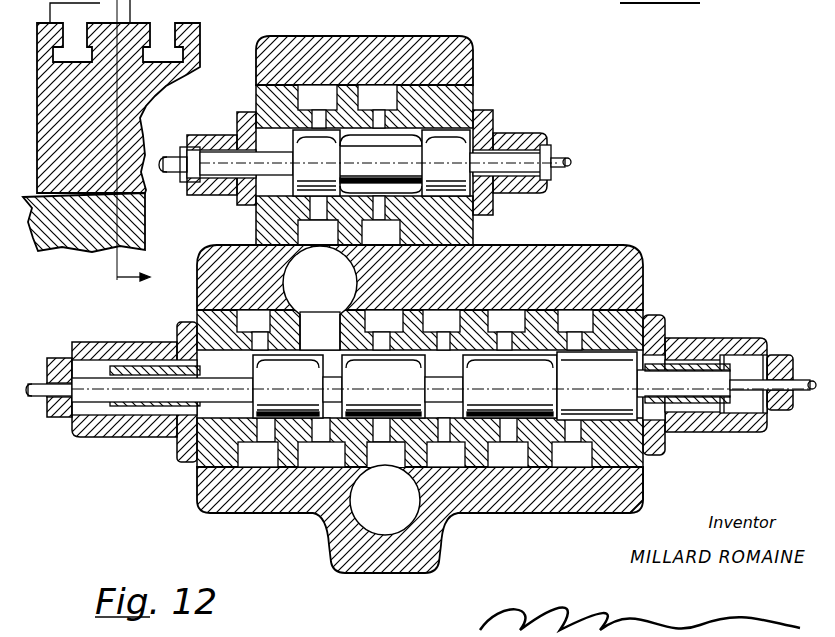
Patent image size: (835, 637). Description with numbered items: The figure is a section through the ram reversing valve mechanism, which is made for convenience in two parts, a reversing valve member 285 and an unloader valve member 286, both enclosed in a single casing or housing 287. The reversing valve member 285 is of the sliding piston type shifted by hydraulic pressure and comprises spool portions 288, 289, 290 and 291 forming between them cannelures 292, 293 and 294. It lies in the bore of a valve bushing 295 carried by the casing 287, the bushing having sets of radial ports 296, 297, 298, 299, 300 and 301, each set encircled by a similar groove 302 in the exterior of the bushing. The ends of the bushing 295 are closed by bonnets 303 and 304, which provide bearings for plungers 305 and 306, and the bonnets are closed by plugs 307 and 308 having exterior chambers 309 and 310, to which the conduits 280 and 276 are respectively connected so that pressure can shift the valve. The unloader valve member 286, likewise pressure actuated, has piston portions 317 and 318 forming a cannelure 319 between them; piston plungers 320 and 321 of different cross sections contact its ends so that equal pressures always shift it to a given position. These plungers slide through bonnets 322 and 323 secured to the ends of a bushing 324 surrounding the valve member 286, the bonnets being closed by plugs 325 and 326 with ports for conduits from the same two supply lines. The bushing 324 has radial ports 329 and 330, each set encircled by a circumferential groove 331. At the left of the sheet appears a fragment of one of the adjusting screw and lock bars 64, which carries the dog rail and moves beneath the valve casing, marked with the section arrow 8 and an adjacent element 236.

The adjusting screw and lock bar 64 is at (142, 231).
The bracket line 236 is at (138, 30).
The section arrow 8 is at (124, 278).
The cannelure 319 is at (472, 56).
The piston portion 317 is at (266, 102).
The piston portion 318 is at (476, 97).
The piston plunger 320 is at (500, 156).
The piston plunger 321 is at (242, 157).
The bushing 324 is at (298, 86).
The radial ports 329 is at (313, 112).
The circumferential groove 331 is at (371, 105).
The radial ports 330 is at (379, 114).
The unloader valve member 286 is at (478, 106).
The bonnet 323 is at (200, 138).
The plug 326 is at (176, 184).
The bonnet 322 is at (537, 138).
The plug 325 is at (551, 174).
The casing or housing 287 is at (600, 262).
The piston or spool portion 288 is at (222, 442).
The valve bushing 295 is at (200, 503).
The radial ports 296 is at (250, 517).
The cannelure 292 is at (290, 440).
The piston or spool portion 289 is at (337, 443).
The piston or spool portion 290 is at (463, 433).
The cannelure 294 is at (512, 432).
The radial ports 301 is at (591, 450).
The cannelure 293 is at (383, 430).
The radial ports 298 is at (402, 432).
The radial ports 299 is at (455, 437).
The radial ports 300 is at (510, 440).
The piston or spool portion 291 is at (652, 459).
The groove 302 is at (638, 502).
The bonnet 303 is at (752, 329).
The plunger 305 is at (705, 383).
The plug 307 is at (770, 412).
The conduit 280 is at (808, 376).
The chamber 309 is at (770, 352).
The bonnet 304 is at (148, 357).
The plunger 306 is at (135, 437).
The chamber 310 is at (85, 380).
The plug 308 is at (58, 418).
The conduit 276 is at (40, 384).
The radial ports 297 is at (345, 535).
The reversing valve member 285 is at (607, 367).